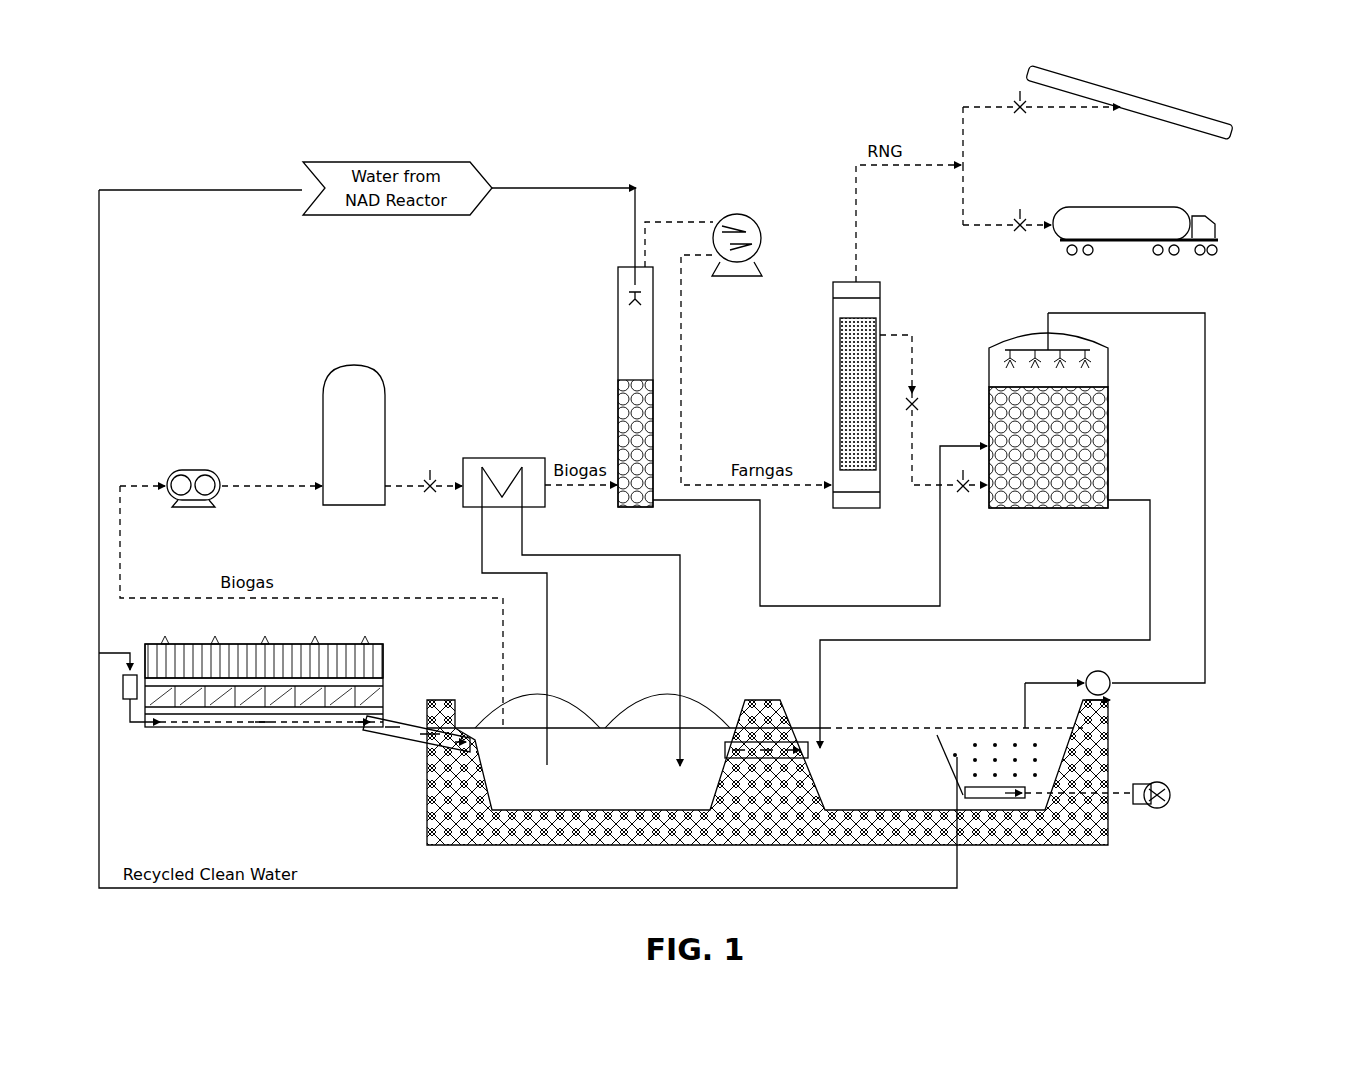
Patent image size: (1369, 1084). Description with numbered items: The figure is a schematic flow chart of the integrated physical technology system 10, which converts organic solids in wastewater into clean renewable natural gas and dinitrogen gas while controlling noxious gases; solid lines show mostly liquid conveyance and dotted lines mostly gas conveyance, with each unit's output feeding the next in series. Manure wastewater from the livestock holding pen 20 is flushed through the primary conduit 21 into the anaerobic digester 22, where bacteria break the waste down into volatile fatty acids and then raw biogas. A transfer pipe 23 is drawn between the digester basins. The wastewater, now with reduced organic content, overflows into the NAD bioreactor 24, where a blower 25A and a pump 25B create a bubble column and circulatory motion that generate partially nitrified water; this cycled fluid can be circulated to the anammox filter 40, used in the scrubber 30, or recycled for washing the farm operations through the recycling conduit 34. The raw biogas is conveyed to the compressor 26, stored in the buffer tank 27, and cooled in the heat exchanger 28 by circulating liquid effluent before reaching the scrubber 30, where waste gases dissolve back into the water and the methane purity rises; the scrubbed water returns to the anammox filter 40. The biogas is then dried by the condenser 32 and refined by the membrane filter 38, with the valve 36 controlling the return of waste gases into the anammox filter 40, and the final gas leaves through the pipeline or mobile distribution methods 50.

The integrated physical technology system 10 is at (213, 145).
The livestock holding pen 20 is at (222, 728).
The primary conduit 21 is at (410, 737).
The anaerobic digester 22 is at (767, 782).
The transfer pipe 23 is at (775, 740).
The NAD bioreactor 24 is at (954, 813).
The blower 25A is at (1168, 788).
The pump 25B is at (1110, 692).
The compressor 26 is at (180, 469).
The buffer tank 27 is at (322, 452).
The heat exchanger 28 is at (467, 508).
The scrubber 30 is at (617, 378).
The condenser 32 is at (758, 222).
The recycling conduit 34 is at (123, 700).
The valve 36 is at (918, 398).
The membrane filter 38 is at (832, 412).
The anammox filter 40 is at (992, 508).
The pipeline or mobile distribution methods 50 is at (1157, 133).